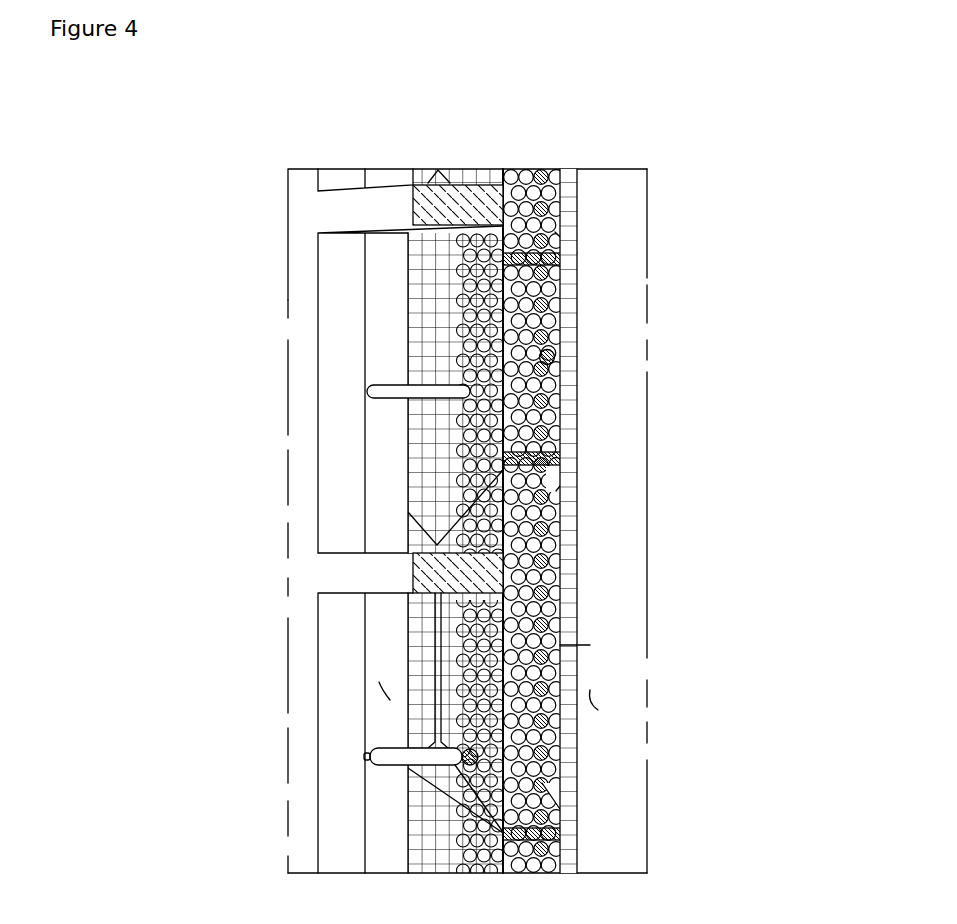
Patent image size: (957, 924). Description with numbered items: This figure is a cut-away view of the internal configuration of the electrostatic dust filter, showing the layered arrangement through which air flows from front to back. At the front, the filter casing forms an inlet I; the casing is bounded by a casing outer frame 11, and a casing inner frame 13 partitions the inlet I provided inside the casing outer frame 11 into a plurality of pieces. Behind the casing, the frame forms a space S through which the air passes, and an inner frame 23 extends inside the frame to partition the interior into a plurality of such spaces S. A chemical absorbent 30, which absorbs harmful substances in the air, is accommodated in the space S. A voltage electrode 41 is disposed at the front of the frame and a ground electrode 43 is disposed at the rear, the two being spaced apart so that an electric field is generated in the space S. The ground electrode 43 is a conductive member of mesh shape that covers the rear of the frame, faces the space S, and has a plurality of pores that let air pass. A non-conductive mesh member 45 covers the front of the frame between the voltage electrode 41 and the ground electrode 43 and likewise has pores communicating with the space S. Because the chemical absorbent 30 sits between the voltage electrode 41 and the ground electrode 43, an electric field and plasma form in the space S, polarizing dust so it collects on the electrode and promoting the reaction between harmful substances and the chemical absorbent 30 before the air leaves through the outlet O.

The casing outer frame 11 is at (305, 311).
The casing inner frame 13 is at (351, 207).
The inner frame 23 is at (576, 252).
The chemical absorbent 30 is at (548, 291).
The voltage electrode 41 is at (380, 391).
The ground electrode 43 is at (578, 406).
The mesh member 45 is at (550, 357).
The inlet I is at (380, 688).
The space S is at (590, 645).
The outlet O is at (592, 692).